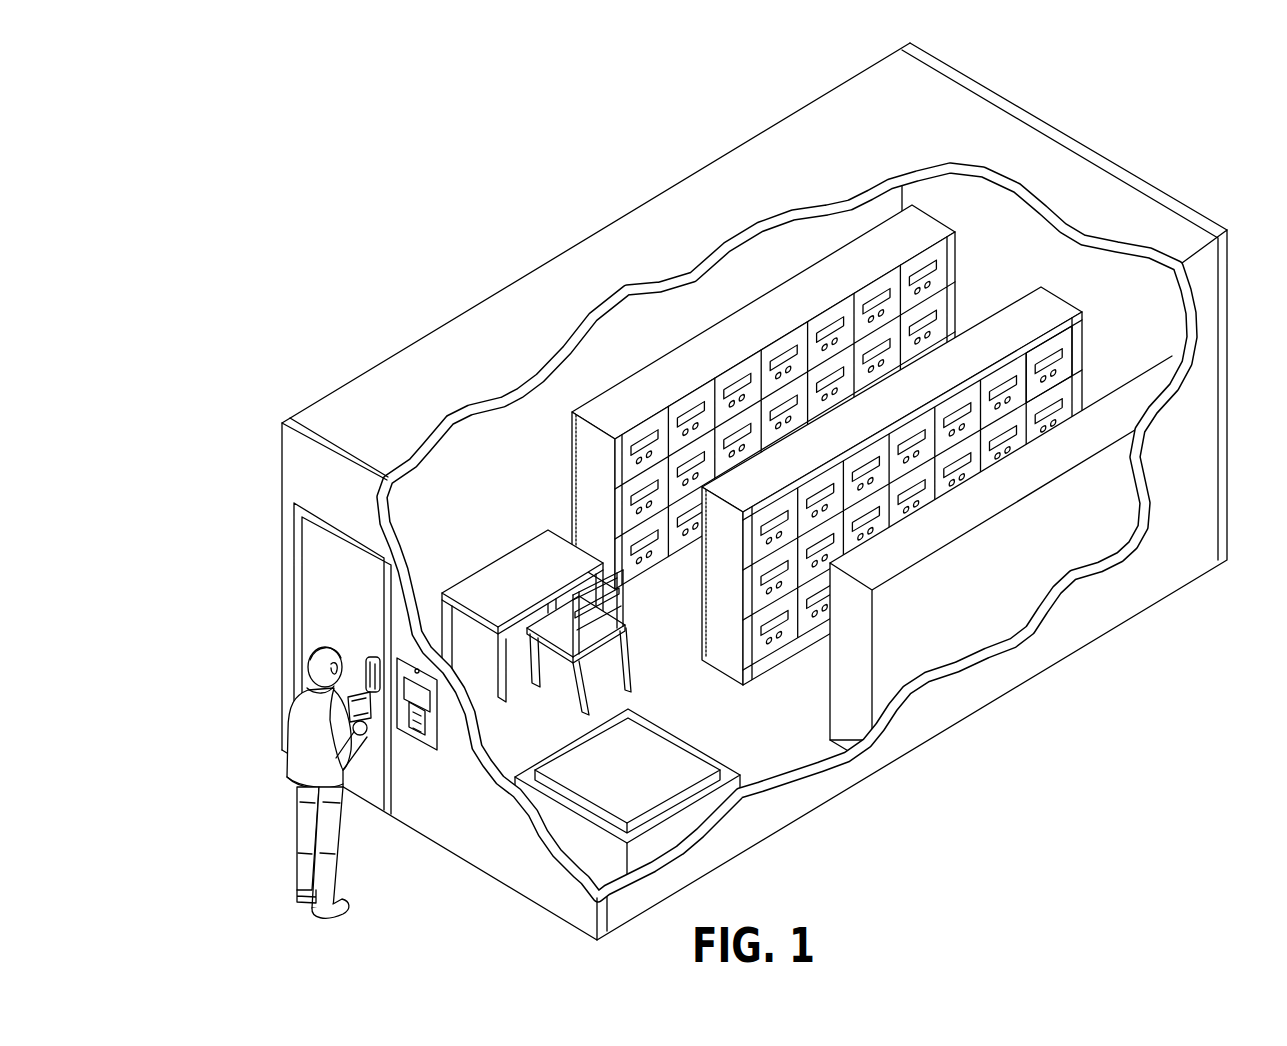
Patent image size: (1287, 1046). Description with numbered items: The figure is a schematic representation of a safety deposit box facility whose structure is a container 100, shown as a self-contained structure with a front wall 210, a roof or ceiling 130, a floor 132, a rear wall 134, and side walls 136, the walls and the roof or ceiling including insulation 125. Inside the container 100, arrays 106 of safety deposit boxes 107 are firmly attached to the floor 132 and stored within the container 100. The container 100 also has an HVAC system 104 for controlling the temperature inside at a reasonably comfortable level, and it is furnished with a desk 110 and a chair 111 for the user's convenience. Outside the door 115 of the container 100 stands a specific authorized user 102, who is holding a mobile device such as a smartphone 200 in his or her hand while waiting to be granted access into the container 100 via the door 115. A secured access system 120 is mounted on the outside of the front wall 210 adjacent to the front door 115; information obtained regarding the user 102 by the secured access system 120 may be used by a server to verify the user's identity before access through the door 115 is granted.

The container 100 is at (505, 140).
The user 102 is at (303, 712).
The HVAC system 104 is at (672, 757).
The arrays 106 is at (1027, 318).
The safety deposit boxes 107 is at (1076, 356).
The desk 110 is at (500, 580).
The chair 111 is at (559, 640).
The door 115 is at (317, 573).
The secured access system 120 is at (422, 766).
The insulation 125 is at (841, 198).
The roof or ceiling 130 is at (509, 360).
The floor 132 is at (798, 738).
The rear wall 134 is at (1126, 289).
The side walls 136 is at (1199, 477).
The smartphone 200 is at (362, 687).
The front wall 210 is at (498, 831).